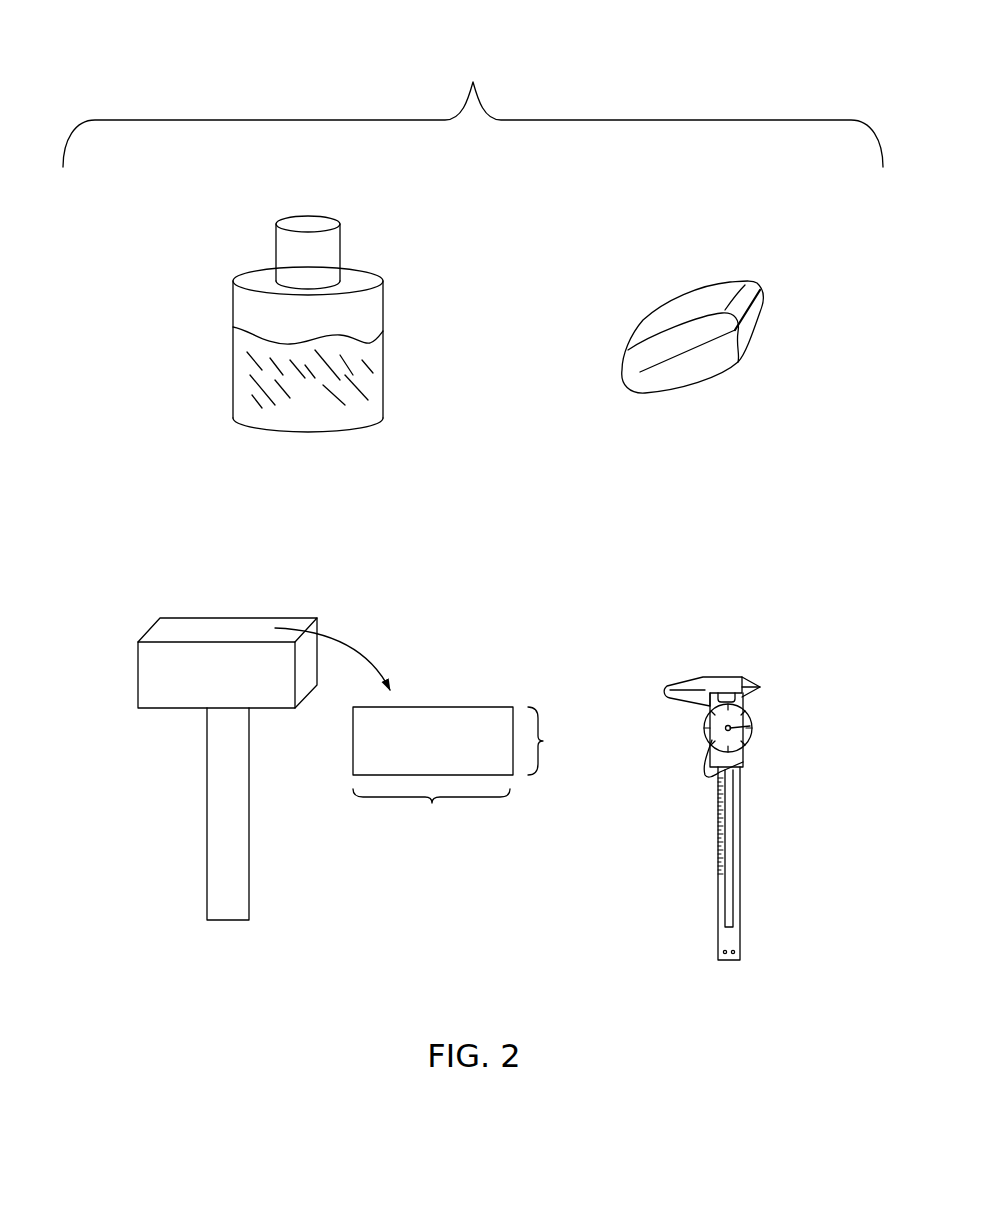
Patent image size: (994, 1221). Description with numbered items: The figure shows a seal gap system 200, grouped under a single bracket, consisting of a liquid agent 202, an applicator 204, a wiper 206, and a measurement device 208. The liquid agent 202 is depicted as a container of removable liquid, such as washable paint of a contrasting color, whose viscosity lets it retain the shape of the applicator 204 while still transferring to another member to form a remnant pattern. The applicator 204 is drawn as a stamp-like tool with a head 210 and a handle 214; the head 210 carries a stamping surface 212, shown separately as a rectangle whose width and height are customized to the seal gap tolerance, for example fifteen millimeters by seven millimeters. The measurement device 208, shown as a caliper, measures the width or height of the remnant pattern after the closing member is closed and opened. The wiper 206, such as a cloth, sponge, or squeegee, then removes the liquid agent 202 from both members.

The seal gap system 200 is at (473, 82).
The liquid agent 202 is at (308, 202).
The applicator 204 is at (343, 715).
The wiper 206 is at (698, 237).
The measurement device 208 is at (737, 655).
The head 210 is at (202, 677).
The stamping surface 212 is at (343, 692).
The handle 214 is at (235, 842).